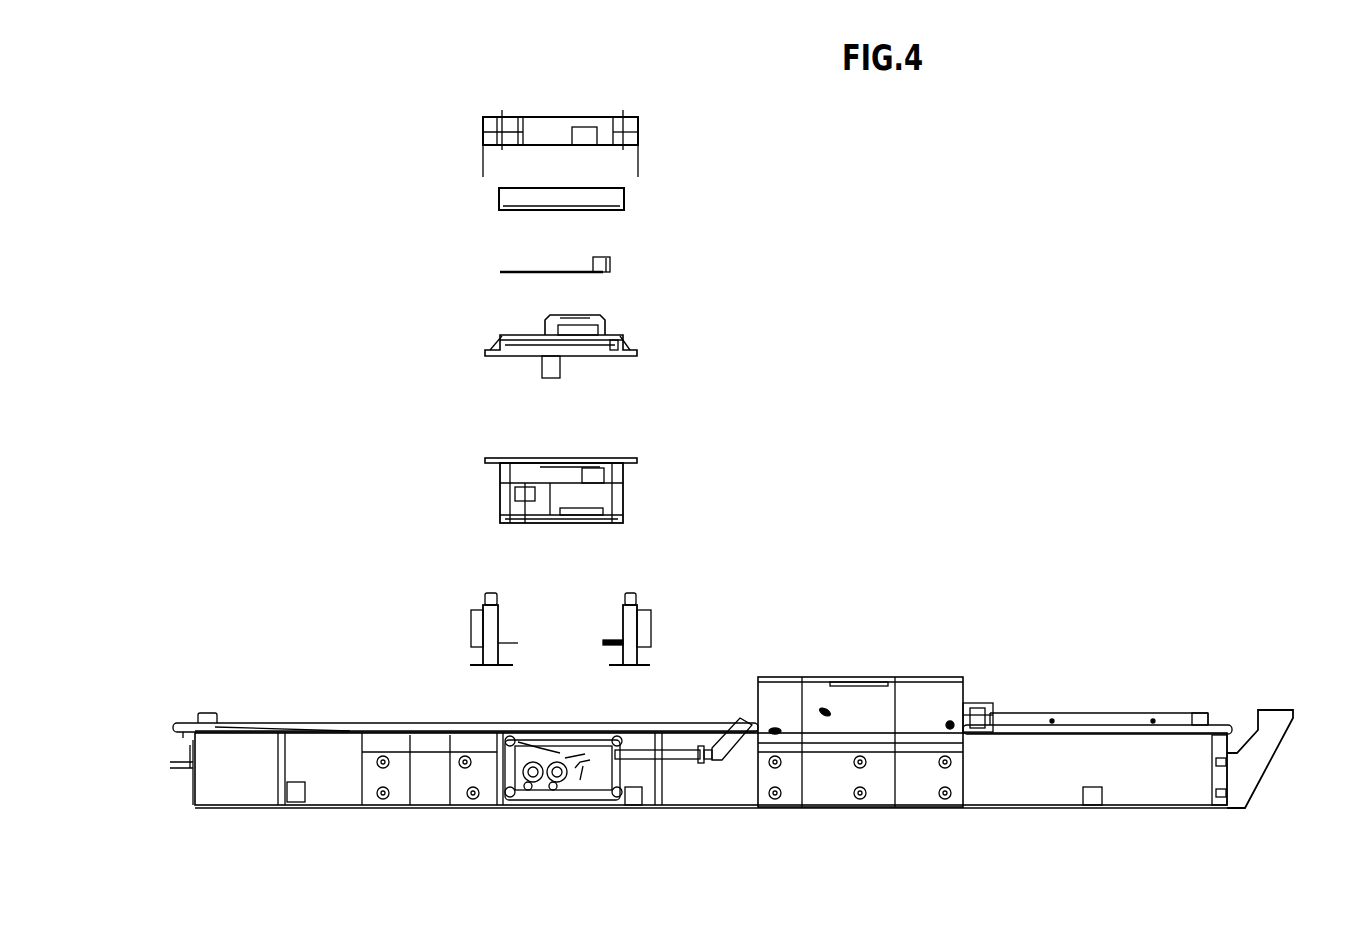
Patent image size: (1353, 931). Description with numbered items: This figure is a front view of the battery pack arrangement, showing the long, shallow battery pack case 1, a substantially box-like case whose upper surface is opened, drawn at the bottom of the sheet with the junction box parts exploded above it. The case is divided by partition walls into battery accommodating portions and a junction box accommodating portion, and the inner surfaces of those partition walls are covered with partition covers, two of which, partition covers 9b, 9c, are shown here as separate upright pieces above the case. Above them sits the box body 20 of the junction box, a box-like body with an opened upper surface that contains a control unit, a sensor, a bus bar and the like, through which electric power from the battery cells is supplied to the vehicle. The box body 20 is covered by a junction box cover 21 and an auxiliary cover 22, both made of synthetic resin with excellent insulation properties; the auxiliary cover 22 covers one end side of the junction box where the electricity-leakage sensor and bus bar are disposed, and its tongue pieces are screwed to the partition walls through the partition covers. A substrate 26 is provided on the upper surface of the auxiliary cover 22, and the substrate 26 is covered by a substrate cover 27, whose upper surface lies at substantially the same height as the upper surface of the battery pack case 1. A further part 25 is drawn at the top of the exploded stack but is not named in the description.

The battery pack case 1 is at (1283, 710).
The partition cover 9b is at (480, 636).
The partition cover 9c is at (650, 628).
The box body 20 is at (623, 480).
The junction box cover 21 is at (649, 332).
The auxiliary cover 22 is at (637, 343).
The top cover 25 is at (638, 130).
The substrate 26 is at (606, 272).
The substrate cover 27 is at (618, 197).